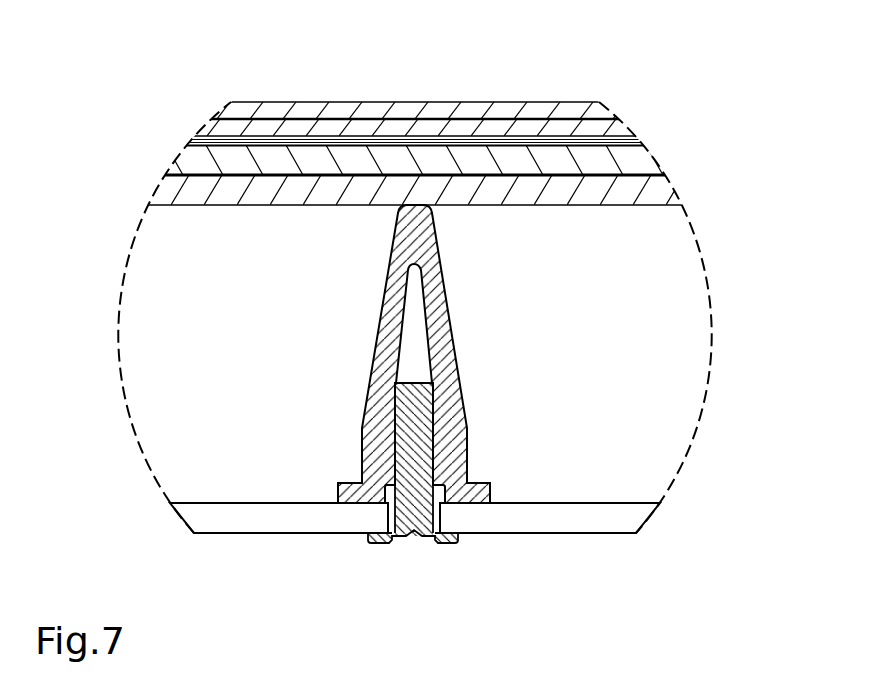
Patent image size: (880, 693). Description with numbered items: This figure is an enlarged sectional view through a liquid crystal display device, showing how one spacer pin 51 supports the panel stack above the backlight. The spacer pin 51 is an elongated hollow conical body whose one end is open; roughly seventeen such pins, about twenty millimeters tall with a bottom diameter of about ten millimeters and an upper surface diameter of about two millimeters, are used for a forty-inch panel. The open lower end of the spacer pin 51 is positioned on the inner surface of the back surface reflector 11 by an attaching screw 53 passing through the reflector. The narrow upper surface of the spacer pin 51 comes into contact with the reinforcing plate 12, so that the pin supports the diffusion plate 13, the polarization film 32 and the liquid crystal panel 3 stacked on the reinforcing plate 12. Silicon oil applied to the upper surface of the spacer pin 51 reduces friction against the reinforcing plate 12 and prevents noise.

The liquid crystal panel 3 is at (473, 111).
The polarizer 32 is at (195, 142).
The diffusion plate 13 is at (630, 158).
The reinforcing plate 12 is at (668, 183).
The back surface reflector 11 is at (597, 522).
The spacer pin 51 is at (452, 343).
The attaching screw 53 is at (414, 536).